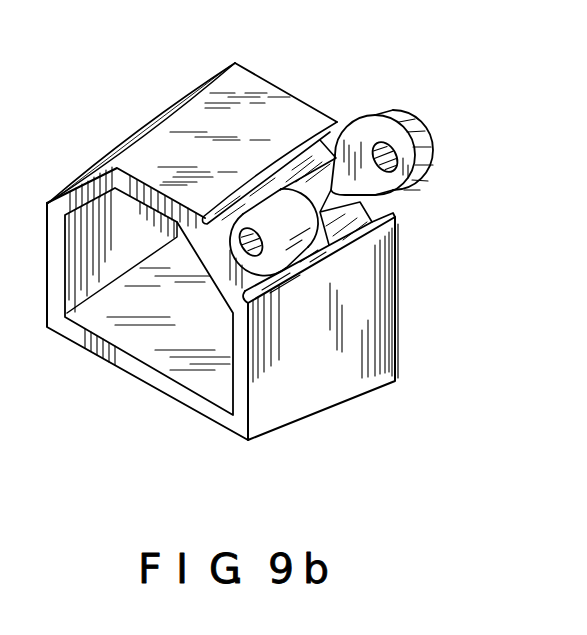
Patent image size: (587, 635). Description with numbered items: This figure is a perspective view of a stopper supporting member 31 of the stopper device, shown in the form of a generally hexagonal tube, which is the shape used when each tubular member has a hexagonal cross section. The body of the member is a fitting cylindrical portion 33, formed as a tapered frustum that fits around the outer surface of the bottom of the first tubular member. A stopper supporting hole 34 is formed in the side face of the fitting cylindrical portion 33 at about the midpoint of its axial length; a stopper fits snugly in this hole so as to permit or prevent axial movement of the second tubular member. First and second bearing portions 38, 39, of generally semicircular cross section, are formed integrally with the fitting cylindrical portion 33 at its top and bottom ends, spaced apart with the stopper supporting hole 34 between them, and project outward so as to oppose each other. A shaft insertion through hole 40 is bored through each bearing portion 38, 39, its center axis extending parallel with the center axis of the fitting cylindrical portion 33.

The first stopper supporting member 31 is at (403, 337).
The fitting cylindrical portion 33 is at (285, 402).
The stopper supporting hole 34 is at (402, 191).
The first bearing portion 38 is at (413, 130).
The second bearing portion 39 is at (293, 250).
The shaft insertion through hole 40 is at (248, 230).